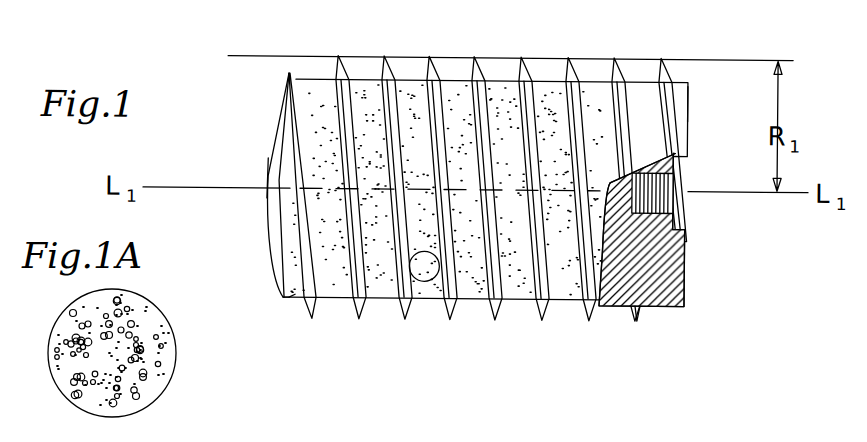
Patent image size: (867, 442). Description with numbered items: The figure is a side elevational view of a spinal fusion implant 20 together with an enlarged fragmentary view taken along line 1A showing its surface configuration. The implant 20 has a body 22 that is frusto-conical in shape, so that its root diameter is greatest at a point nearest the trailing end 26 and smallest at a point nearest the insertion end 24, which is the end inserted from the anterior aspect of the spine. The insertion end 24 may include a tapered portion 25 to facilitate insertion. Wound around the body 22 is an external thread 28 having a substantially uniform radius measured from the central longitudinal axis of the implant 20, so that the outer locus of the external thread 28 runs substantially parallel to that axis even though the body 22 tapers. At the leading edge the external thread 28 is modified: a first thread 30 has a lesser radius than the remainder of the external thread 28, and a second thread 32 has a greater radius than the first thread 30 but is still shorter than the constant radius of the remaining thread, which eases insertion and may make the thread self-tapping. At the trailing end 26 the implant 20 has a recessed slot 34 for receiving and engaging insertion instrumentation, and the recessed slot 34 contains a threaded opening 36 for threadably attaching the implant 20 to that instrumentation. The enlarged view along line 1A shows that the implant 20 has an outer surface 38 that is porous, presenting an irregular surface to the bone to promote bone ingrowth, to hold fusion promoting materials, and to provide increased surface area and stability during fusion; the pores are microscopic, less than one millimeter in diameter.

In FIG. 1, the spinal fusion implant 20 is at (262, 110).
In FIG. 1, the body 22 is at (398, 75).
In FIG. 1, the insertion end 24 is at (289, 299).
In FIG. 1, the tapered portion 25 is at (268, 158).
In FIG. 1, the trailing end 26 is at (690, 98).
In FIG. 1, the external thread 28 is at (388, 294).
In FIG. 1, the first thread 30 is at (287, 73).
In FIG. 1, the second thread 32 is at (339, 76).
In FIG. 1, the recessed slot 34 is at (685, 229).
In FIG. 1, the threaded opening 36 is at (673, 180).
In FIG. 1, the outer surface 38 is at (568, 300).
In FIG. 1A, the outer surface 38 is at (176, 371).
In FIG. 1, the line 1A is at (428, 283).